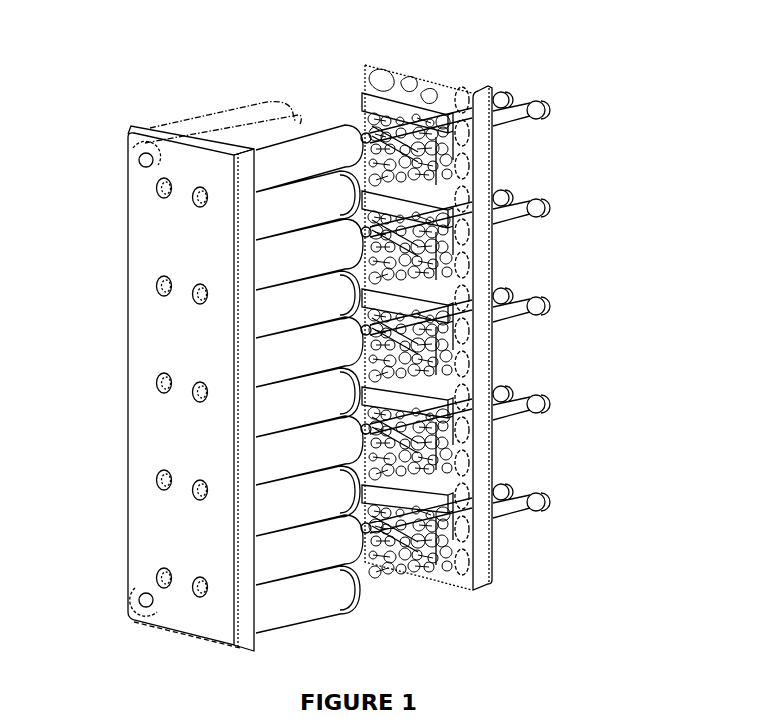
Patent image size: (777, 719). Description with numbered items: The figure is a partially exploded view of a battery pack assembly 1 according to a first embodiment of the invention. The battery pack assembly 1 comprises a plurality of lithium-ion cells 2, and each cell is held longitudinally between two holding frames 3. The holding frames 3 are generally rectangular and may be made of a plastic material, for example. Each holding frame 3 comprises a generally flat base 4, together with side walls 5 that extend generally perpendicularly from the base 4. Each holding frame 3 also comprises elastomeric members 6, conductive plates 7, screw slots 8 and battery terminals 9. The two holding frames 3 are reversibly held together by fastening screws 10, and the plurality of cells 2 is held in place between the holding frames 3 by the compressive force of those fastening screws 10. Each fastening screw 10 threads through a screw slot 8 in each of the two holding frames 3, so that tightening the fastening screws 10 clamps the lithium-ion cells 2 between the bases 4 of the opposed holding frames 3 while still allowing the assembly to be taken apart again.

The battery pack assembly 1 is at (607, 192).
The lithium-ion cells 2 is at (247, 145).
The holding frames 3 is at (143, 132).
The base 4 is at (162, 347).
The side walls 5 is at (247, 623).
The elastomeric members 6 is at (463, 110).
The conductive plates 7 is at (428, 115).
The screw slots 8 is at (160, 478).
The battery terminals 9 is at (146, 598).
The fastening screws 10 is at (545, 505).